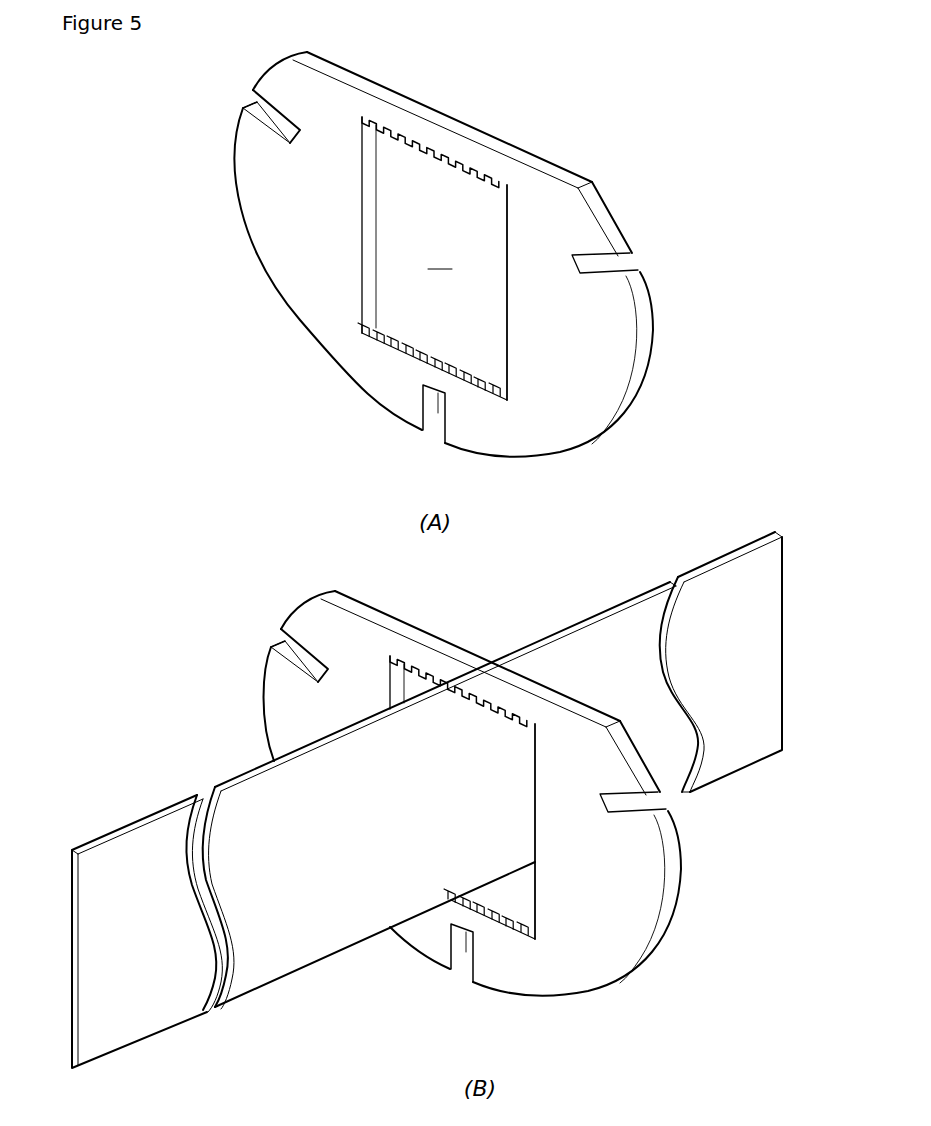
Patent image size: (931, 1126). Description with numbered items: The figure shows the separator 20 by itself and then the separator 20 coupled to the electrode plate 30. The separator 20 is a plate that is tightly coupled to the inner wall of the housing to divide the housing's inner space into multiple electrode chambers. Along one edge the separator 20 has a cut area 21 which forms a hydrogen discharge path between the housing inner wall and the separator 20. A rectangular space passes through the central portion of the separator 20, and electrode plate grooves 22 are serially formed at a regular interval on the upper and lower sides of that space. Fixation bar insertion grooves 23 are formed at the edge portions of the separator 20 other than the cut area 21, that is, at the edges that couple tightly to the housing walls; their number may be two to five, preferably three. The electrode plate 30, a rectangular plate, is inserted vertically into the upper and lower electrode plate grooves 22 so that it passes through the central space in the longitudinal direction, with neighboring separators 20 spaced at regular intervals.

The separator 20 is at (238, 311).
The cut area 21 is at (447, 120).
The electrode plate grooves 22 is at (447, 160).
The fixation bar insertion grooves 23 is at (278, 121).
The electrode plate 30 is at (208, 778).